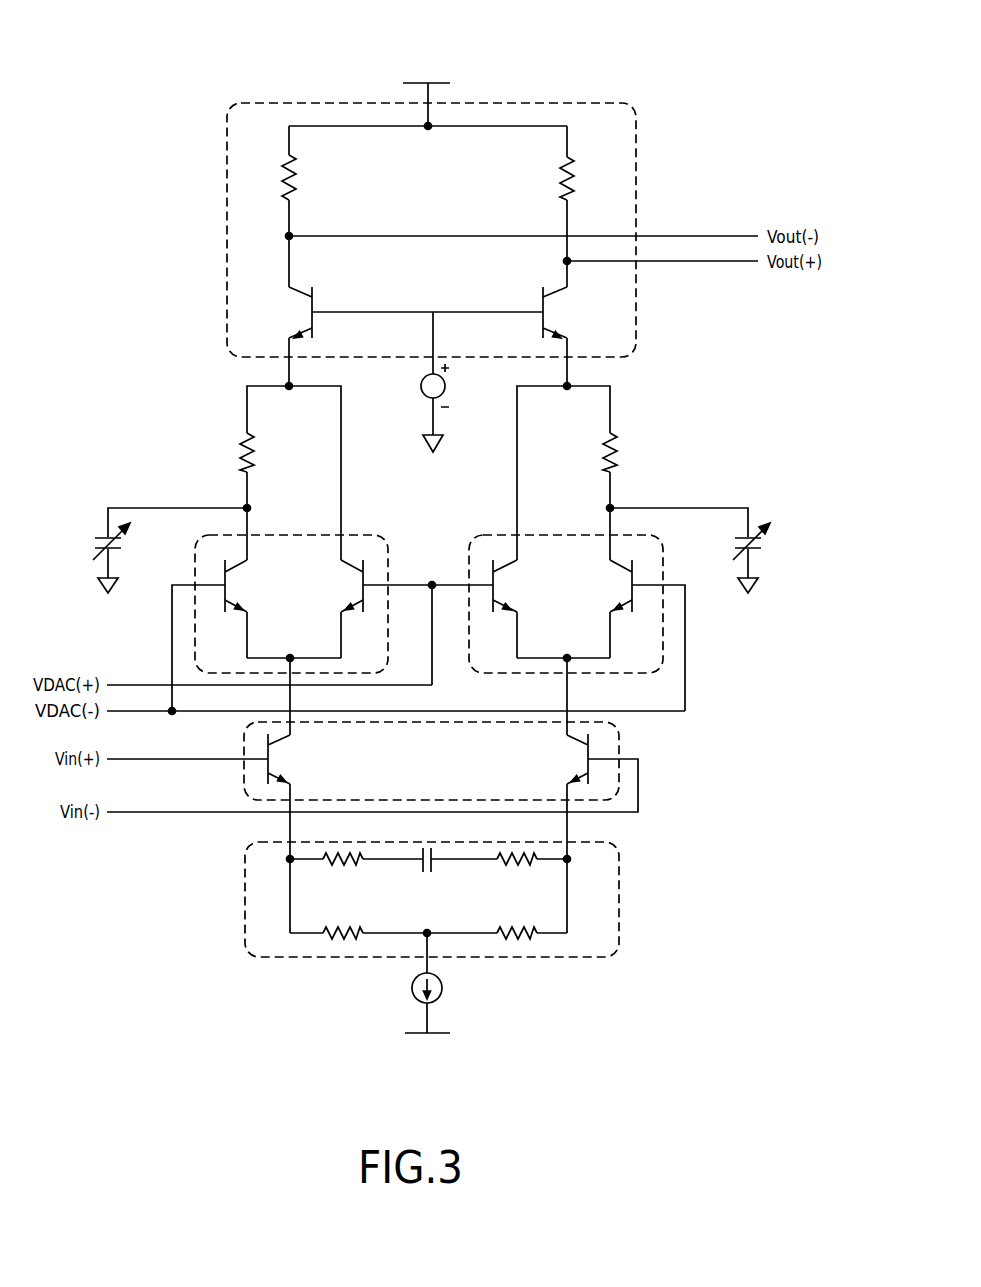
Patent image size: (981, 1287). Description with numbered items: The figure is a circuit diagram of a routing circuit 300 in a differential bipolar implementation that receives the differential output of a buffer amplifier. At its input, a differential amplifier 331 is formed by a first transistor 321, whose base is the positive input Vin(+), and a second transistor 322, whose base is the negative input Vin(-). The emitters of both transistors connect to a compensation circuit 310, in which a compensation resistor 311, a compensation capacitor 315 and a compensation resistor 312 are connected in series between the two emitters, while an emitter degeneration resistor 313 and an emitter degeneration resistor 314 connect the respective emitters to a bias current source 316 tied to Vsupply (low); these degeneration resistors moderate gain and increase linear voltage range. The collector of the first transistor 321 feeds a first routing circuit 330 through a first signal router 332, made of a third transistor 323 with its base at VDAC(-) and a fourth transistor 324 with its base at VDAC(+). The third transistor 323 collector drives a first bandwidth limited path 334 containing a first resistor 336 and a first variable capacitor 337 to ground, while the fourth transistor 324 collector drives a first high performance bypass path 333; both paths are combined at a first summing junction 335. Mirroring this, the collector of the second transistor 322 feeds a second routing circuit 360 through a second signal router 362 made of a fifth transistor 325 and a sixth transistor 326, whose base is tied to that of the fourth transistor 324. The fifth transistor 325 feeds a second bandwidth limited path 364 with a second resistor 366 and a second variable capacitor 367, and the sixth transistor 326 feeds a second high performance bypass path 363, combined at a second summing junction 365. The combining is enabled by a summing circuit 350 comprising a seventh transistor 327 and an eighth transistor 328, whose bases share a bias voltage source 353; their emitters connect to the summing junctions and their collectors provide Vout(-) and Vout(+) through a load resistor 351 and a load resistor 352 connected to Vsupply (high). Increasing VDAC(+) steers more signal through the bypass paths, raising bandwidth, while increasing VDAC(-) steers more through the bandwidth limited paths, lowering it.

The routing circuit 300 is at (539, 30).
The compensation circuit 310 is at (619, 892).
The compensation resistor 311 is at (325, 868).
The compensation resistor 312 is at (500, 868).
The emitter degeneration resistor 313 is at (337, 942).
The emitter degeneration resistor 314 is at (517, 942).
The compensation capacitor 315 is at (427, 875).
The bias current source 316 is at (413, 990).
The first transistor 321 is at (278, 757).
The second transistor 322 is at (580, 757).
The third transistor 323 is at (243, 585).
The fourth transistor 324 is at (345, 585).
The fifth transistor 325 is at (612, 590).
The sixth transistor 326 is at (515, 585).
The seventh transistor 327 is at (307, 307).
The eighth transistor 328 is at (558, 310).
The first routing circuit 330 is at (216, 358).
The differential amplifier 331 is at (620, 748).
The first signal router 332 is at (195, 620).
The first high performance bypass path 333 is at (341, 505).
The first bandwidth limited path 334 is at (245, 398).
The first summing junction 335 is at (289, 390).
The first resistor 336 is at (252, 470).
The first variable capacitor 337 is at (125, 545).
The summing circuit 350 is at (637, 128).
The load resistor 351 is at (294, 183).
The load resistor 352 is at (560, 178).
The bias voltage source 353 is at (421, 386).
The second routing circuit 360 is at (641, 364).
The second signal router 362 is at (663, 620).
The second high performance bypass path 363 is at (517, 505).
The second bandwidth limited path 364 is at (612, 401).
The second summing junction 365 is at (567, 390).
The second resistor 366 is at (605, 470).
The second variable capacitor 367 is at (728, 545).